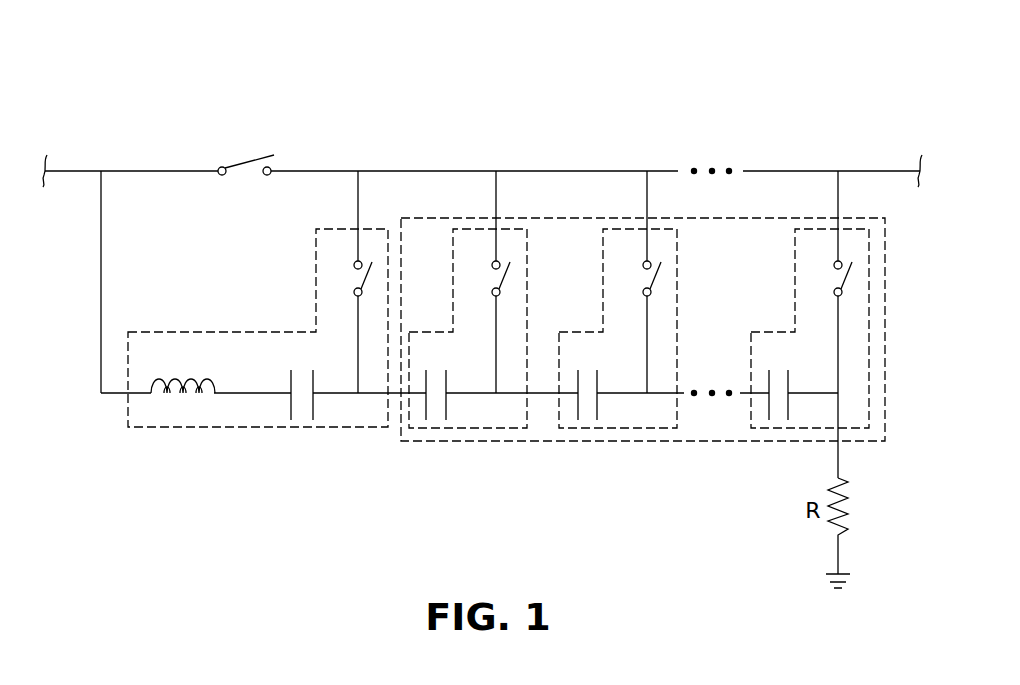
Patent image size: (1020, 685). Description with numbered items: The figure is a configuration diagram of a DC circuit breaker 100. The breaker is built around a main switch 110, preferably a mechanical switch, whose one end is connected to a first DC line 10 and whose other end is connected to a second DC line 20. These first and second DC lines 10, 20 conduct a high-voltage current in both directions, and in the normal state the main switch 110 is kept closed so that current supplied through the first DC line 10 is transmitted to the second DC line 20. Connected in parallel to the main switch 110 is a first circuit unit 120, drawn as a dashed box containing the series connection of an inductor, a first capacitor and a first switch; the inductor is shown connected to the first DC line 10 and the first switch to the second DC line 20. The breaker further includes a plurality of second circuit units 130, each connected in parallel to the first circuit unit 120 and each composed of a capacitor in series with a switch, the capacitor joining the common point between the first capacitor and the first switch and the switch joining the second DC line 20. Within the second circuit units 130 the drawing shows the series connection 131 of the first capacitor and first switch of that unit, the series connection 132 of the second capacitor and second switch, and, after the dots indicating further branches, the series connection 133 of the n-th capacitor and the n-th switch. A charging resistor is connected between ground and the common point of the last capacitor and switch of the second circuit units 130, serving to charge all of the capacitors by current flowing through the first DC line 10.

The DC circuit breaker 100 is at (437, 96).
The first DC line 10 is at (148, 168).
The main switch 110 is at (248, 155).
The second DC line 20 is at (310, 168).
The first circuit unit 120 is at (261, 428).
The second circuit units 130 is at (698, 442).
The series connection of first capacitor C1 and first switch S1 131 is at (468, 429).
The series connection of second capacitor C2 and second switch S2 132 is at (620, 429).
The series connection of n-th capacitor Cn and n-th switch Sn 133 is at (795, 429).